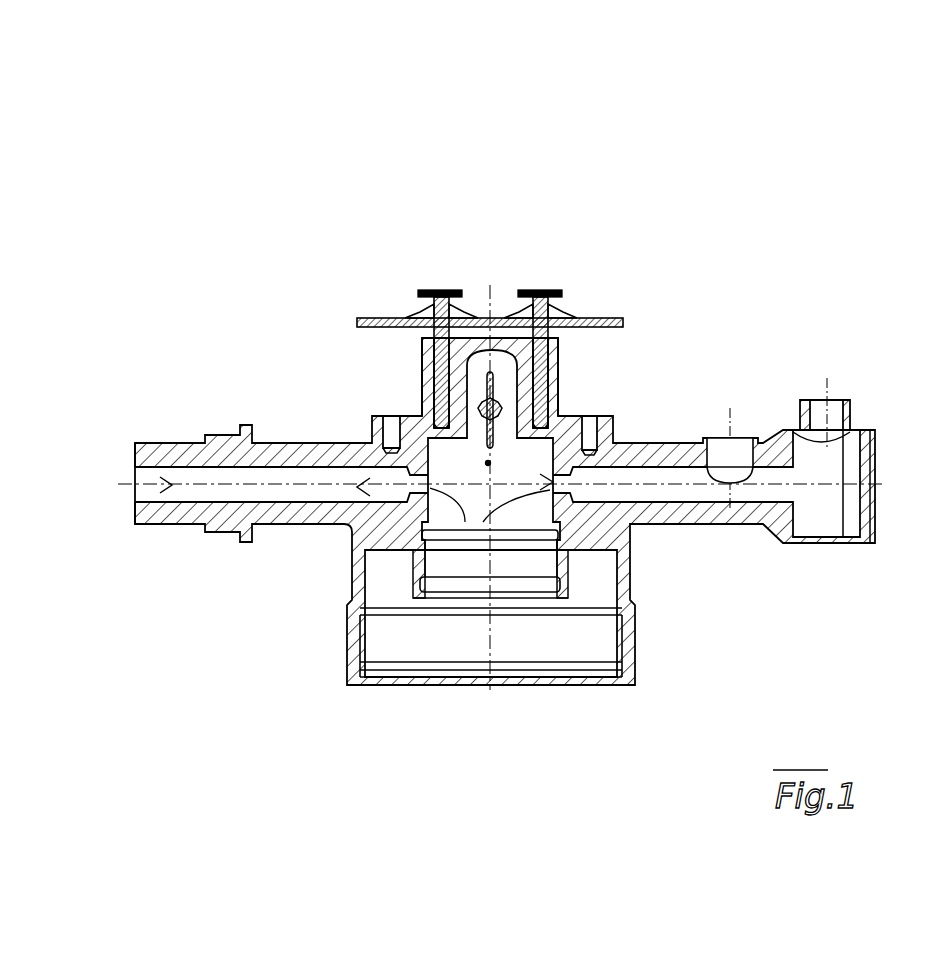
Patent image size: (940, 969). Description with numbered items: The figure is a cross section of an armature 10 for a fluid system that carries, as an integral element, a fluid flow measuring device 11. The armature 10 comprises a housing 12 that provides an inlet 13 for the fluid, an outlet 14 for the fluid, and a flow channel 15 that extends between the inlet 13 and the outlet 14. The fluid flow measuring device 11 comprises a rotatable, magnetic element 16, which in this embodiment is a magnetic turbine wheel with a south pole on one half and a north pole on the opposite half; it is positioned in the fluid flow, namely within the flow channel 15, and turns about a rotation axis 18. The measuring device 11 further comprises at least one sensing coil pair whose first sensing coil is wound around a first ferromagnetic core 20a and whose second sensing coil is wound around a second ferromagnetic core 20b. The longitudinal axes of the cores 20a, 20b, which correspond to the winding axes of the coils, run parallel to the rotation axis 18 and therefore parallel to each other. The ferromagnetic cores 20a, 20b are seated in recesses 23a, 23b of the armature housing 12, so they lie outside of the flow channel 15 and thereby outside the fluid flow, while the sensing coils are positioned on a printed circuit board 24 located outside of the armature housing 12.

The armature 10 is at (233, 668).
The fluid flow measuring device 11 is at (588, 300).
The housing 12 is at (370, 527).
The inlet 13 is at (158, 486).
The outlet 14 is at (828, 487).
The flow channel 15 is at (473, 446).
The rotatable, magnetic element 16 is at (505, 347).
The rotation axis 18 is at (600, 430).
The first ferromagnetic core 20a is at (425, 368).
The second ferromagnetic core 20b is at (548, 370).
The recess 23a is at (425, 428).
The recess 23b is at (488, 463).
The printed circuit board 24 is at (623, 318).